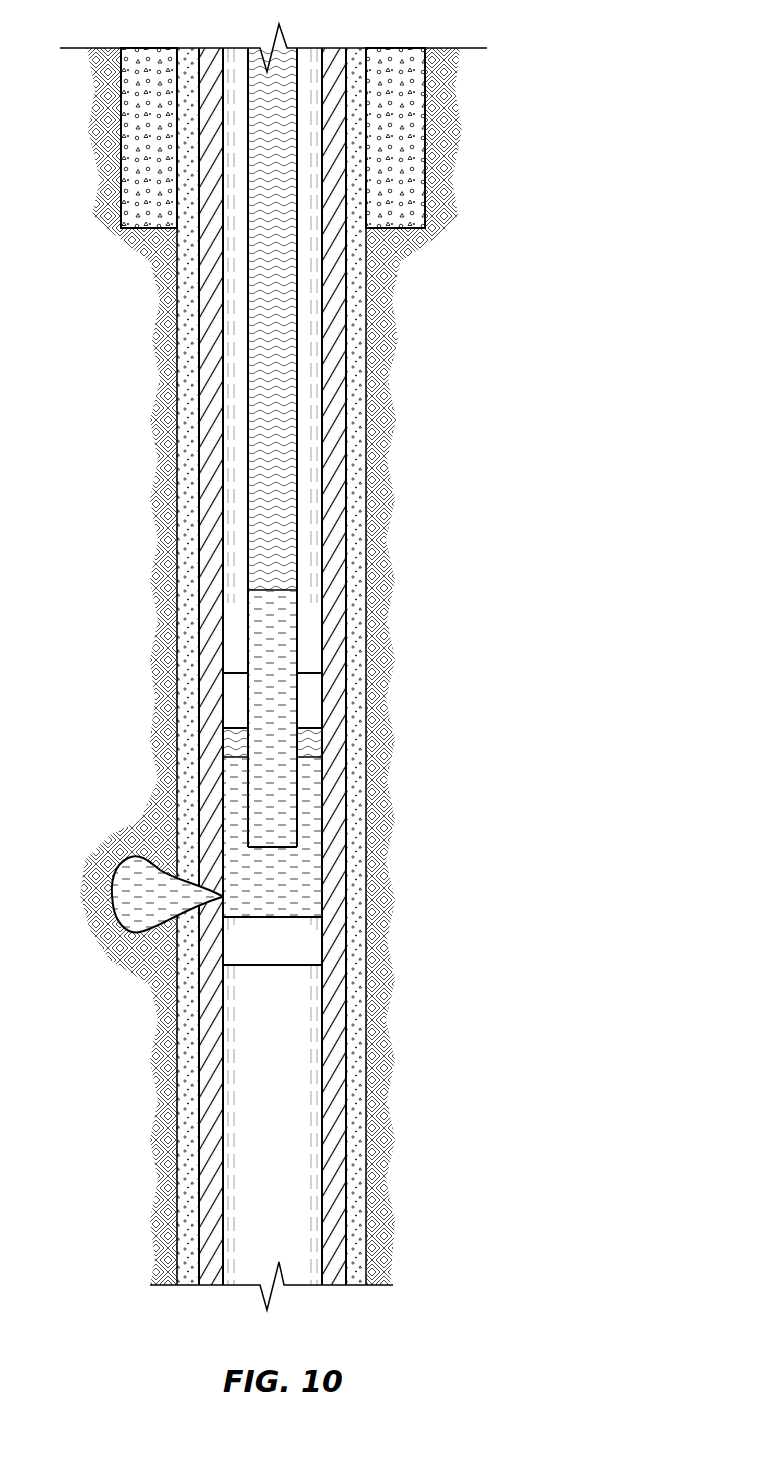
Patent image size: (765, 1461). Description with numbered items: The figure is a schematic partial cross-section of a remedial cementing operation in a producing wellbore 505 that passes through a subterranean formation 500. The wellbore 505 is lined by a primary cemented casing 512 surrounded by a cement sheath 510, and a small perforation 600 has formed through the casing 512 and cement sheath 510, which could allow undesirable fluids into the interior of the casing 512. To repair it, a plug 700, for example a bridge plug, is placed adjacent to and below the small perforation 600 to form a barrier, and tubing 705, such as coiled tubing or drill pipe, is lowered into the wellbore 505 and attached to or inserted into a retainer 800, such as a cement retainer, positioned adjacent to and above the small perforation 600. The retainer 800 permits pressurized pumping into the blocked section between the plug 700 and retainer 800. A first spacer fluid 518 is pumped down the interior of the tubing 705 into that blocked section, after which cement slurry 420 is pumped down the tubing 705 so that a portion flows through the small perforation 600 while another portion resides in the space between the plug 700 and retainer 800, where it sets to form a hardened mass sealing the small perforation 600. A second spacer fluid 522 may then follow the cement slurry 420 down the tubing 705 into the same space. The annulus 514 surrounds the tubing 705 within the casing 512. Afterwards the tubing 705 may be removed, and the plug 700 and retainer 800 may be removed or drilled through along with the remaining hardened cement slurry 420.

The cement slurry 420 is at (312, 773).
The subterranean formation 500 is at (92, 893).
The wellbore 505 is at (170, 714).
The cement sheath 510 is at (185, 970).
The casing 512 is at (215, 673).
The annulus 514 is at (233, 373).
The first spacer fluid 518 is at (312, 739).
The second spacer fluid 522 is at (290, 307).
The small perforation 600 is at (118, 870).
The plug 700 is at (312, 938).
The tubing 705 is at (247, 329).
The retainer 800 is at (312, 687).